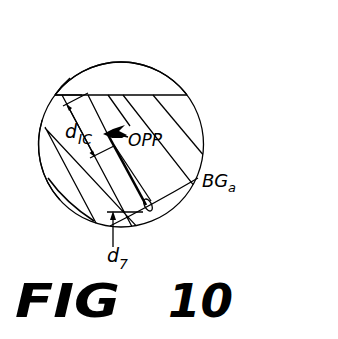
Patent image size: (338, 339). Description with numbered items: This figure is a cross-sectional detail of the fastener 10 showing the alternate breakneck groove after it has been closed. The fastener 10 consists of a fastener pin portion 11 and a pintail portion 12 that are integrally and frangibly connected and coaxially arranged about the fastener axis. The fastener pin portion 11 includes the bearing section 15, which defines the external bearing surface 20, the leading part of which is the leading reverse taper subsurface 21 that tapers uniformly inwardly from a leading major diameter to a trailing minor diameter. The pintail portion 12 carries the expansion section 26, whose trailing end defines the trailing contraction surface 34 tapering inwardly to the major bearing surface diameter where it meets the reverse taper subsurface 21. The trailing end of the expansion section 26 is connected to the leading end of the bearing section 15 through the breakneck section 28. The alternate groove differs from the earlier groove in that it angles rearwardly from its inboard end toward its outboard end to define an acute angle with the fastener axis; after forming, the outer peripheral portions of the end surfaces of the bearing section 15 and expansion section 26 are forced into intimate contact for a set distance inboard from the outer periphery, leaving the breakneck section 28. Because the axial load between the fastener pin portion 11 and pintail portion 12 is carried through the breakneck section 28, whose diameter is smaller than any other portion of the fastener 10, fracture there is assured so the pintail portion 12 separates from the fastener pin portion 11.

The fastener 10 is at (117, 61).
The trailing contraction surface 34 is at (143, 79).
The pintail portion 12 is at (180, 90).
The external bearing surface 20 is at (79, 86).
The leading reverse taper subsurface 21 is at (68, 92).
The expansion section 26 is at (190, 157).
The bearing section 15 is at (50, 160).
The fastener pin portion 11 is at (70, 211).
The breakneck section 28 is at (150, 213).